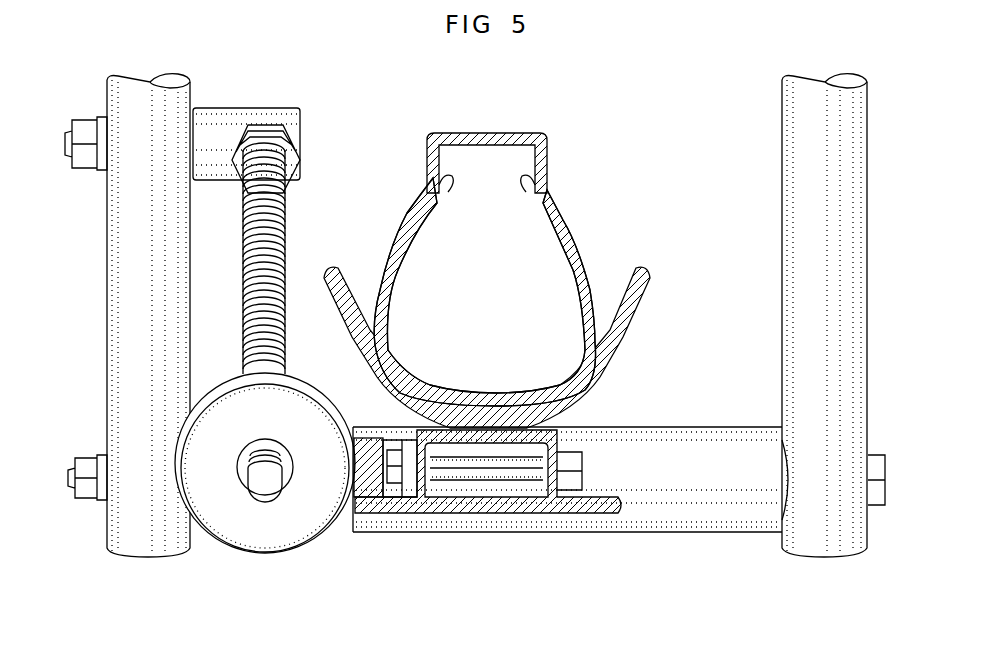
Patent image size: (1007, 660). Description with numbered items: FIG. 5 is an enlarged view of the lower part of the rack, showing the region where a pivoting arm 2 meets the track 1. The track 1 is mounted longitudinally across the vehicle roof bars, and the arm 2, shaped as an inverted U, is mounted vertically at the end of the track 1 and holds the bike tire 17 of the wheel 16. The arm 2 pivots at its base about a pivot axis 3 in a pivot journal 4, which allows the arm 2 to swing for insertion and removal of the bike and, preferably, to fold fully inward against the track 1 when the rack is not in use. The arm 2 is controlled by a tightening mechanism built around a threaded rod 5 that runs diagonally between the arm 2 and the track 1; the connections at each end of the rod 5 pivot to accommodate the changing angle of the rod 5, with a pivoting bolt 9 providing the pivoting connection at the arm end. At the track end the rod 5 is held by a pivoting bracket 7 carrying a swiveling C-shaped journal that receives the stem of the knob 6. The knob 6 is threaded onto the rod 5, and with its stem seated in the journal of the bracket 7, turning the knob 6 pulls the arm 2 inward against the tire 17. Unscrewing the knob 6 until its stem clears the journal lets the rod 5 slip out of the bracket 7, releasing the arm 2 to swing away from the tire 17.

The track 1 is at (650, 278).
The arm 2 is at (107, 281).
The pivot axis of arm 3 is at (75, 478).
The pivot journal of arm 4 is at (710, 512).
The threaded-rod brace for pivoting arm 5 is at (288, 228).
The knob 6 is at (274, 428).
The pivoting bracket 7 is at (374, 492).
The pivoting bolt 9 is at (248, 108).
The wheel 16 is at (548, 158).
The tire 17 is at (578, 292).